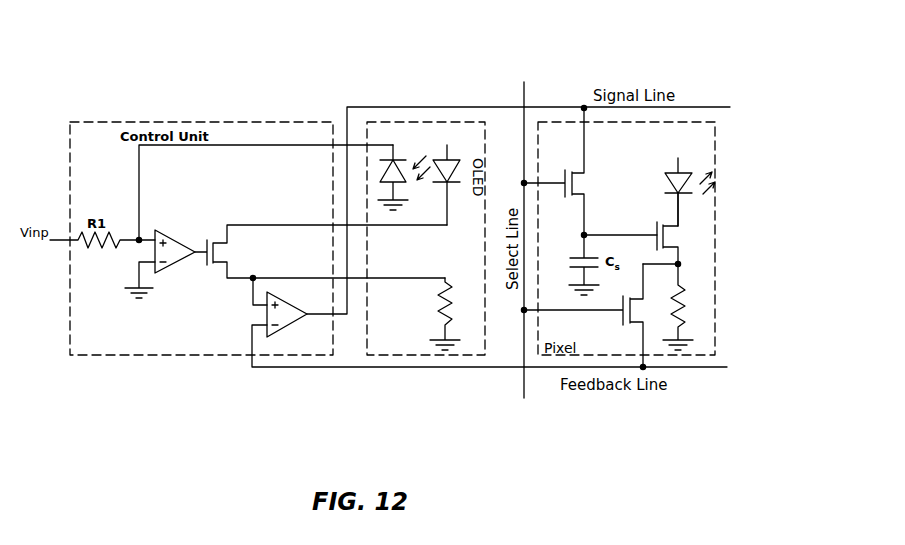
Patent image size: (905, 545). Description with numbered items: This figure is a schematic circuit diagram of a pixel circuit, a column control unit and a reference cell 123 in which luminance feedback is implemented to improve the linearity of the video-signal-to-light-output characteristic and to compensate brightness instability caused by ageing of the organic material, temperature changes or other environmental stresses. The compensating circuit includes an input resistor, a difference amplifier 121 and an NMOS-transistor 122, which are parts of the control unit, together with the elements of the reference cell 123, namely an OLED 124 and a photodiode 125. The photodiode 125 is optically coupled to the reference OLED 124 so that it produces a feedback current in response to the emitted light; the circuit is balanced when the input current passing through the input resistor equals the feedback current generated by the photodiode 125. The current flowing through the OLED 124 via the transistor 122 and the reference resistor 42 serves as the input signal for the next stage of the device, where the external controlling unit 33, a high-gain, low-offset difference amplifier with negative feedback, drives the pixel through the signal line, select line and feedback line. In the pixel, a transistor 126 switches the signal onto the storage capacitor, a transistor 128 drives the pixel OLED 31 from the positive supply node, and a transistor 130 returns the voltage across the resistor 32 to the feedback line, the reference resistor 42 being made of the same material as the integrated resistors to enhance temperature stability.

The difference amplifier 121 is at (170, 268).
The NMOS-transistor 122 is at (234, 240).
The reference cell 123 is at (372, 356).
The OLED 124 is at (453, 153).
The photodiode 125 is at (398, 153).
The switching transistor 126 is at (593, 188).
The driving transistor 128 is at (678, 237).
The feedback transistor 130 is at (652, 312).
The OLED 31 is at (672, 178).
The resistor 32 is at (683, 296).
The external controlling unit 33 is at (273, 333).
The reference resistor 42 is at (447, 322).